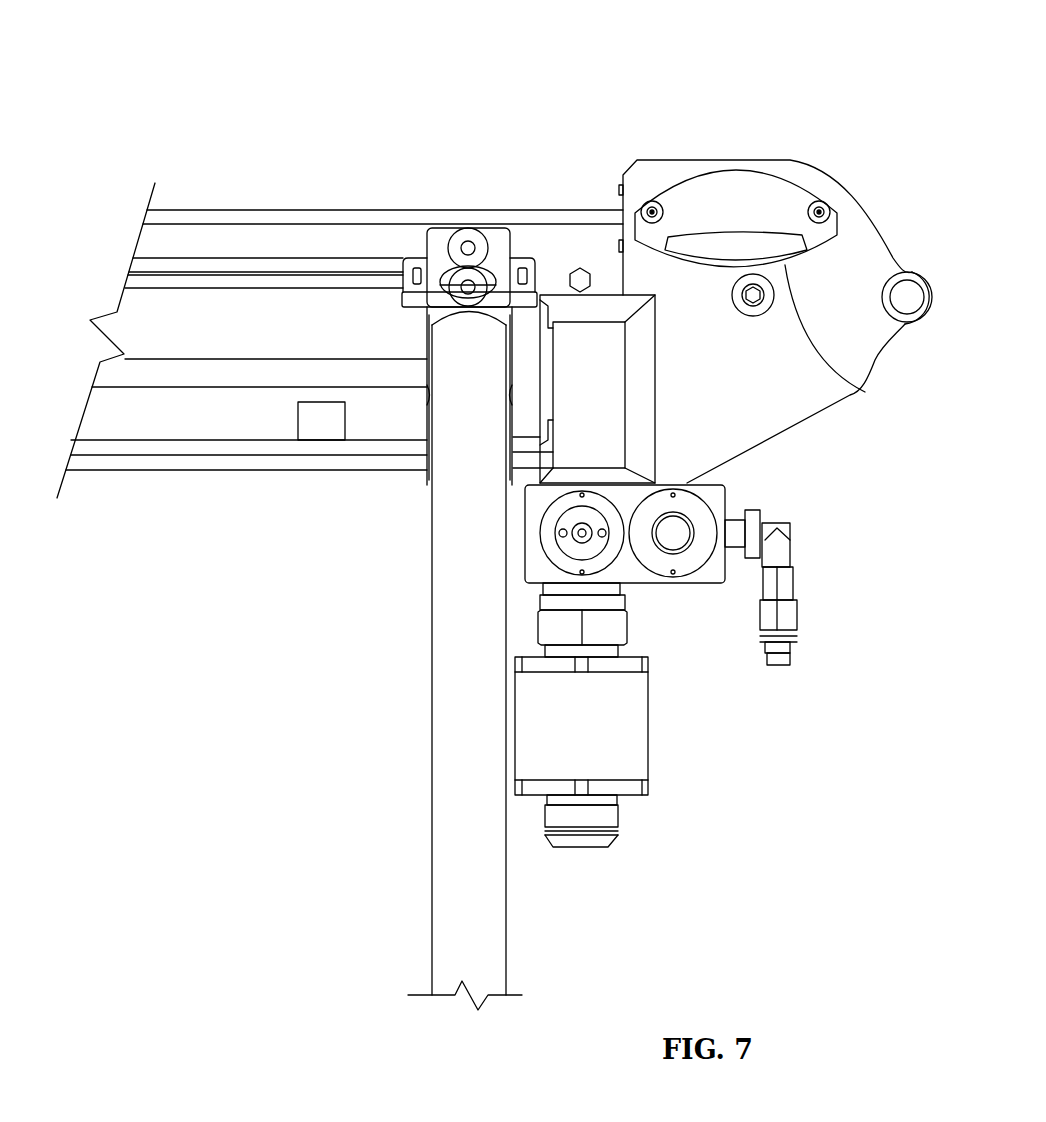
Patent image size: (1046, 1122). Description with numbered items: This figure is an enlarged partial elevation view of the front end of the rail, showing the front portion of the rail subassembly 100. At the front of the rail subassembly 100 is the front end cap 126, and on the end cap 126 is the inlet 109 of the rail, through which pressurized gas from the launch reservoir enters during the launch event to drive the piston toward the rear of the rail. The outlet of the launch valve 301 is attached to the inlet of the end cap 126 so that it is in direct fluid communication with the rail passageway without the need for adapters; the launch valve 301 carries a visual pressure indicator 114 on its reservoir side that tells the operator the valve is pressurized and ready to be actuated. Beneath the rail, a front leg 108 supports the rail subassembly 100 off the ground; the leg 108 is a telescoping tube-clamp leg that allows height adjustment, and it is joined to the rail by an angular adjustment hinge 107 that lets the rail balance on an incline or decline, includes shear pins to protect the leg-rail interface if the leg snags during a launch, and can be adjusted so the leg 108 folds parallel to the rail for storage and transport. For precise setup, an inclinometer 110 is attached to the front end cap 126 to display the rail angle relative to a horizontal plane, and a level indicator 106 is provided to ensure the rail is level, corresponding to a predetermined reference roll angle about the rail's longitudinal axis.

The rail subassembly 100 is at (255, 100).
The level indicator 106 is at (576, 268).
The angular adjustment hinge 107 is at (425, 248).
The front leg 108 is at (432, 695).
The inlet 109 is at (593, 847).
The inclinometer 110 is at (848, 394).
The visual pressure indicator 114 is at (600, 552).
The front end cap 126 is at (870, 142).
The launch valve 301 is at (793, 535).